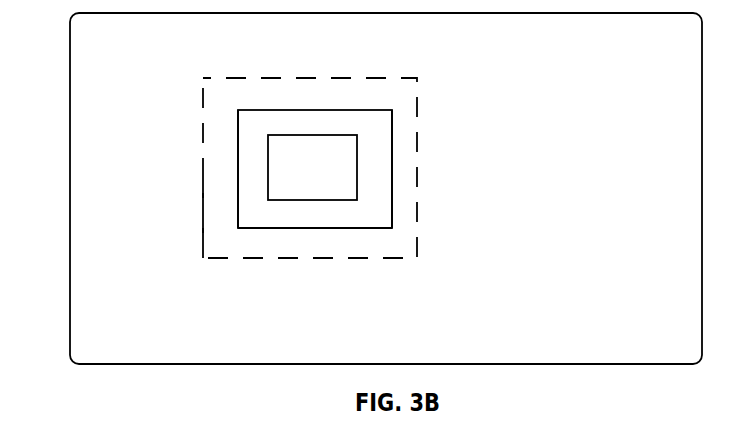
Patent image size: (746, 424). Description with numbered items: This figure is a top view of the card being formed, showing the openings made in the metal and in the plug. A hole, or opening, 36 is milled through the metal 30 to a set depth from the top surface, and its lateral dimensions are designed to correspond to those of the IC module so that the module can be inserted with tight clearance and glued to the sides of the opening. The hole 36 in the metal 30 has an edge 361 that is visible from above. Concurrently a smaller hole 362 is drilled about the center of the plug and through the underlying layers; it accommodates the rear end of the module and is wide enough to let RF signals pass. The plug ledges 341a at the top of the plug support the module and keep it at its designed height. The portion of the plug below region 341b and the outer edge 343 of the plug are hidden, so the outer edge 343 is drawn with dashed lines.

The metal 30 is at (70, 61).
The outer edge of the plug 343 is at (418, 167).
The hole (opening) 36 is at (315, 169).
The hole 362 is at (312, 167).
The edge of hole 36 361 is at (392, 124).
The plug ledges (top of plug) 341a is at (252, 152).
The region of plug 341b is at (222, 200).